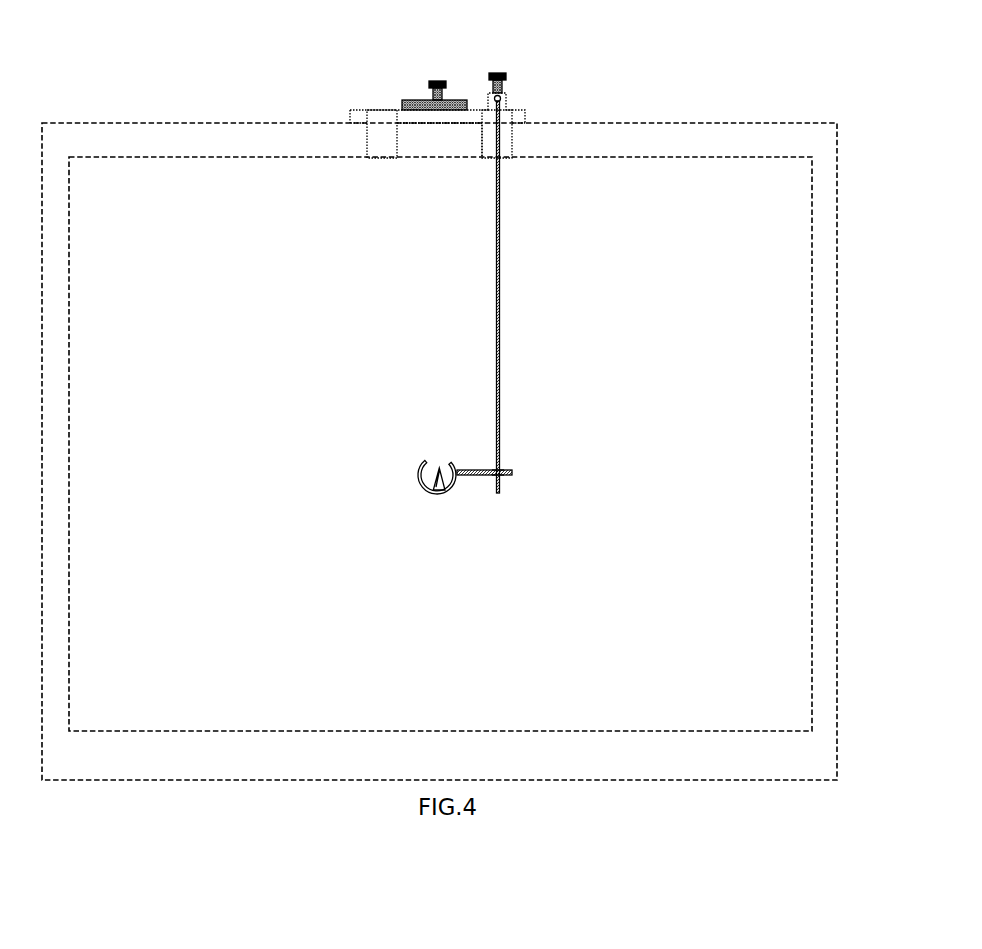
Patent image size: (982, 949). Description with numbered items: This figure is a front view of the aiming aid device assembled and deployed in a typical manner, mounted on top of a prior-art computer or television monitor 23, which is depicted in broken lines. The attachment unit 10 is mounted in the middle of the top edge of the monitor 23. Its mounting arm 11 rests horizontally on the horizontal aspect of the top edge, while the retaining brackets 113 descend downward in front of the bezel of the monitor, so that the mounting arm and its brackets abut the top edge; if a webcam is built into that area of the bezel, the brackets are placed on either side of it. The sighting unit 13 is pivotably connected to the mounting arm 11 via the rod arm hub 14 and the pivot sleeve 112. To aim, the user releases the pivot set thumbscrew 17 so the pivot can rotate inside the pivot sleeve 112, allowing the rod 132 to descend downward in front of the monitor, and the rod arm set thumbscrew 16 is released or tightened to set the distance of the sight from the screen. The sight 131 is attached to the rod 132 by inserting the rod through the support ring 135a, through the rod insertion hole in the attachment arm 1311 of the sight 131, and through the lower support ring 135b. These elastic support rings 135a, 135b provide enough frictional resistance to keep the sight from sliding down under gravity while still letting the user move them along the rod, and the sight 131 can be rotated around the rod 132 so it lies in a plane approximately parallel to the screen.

The attachment unit 10 is at (402, 72).
The mounting arm 11 is at (350, 113).
The pivot sleeve 112 is at (455, 104).
The retaining brackets 113 is at (488, 152).
The rod arm hub 14 is at (505, 107).
The rod arm set thumbscrew 16 is at (501, 74).
The pivot set thumbscrew 17 is at (439, 81).
The sighting unit 13 is at (523, 336).
The rod 132 is at (500, 422).
The sight 131 is at (437, 464).
The attachment arm 1311 is at (473, 477).
The support ring 135a is at (498, 470).
The lower support ring 135b is at (498, 475).
The monitor 23 is at (772, 385).